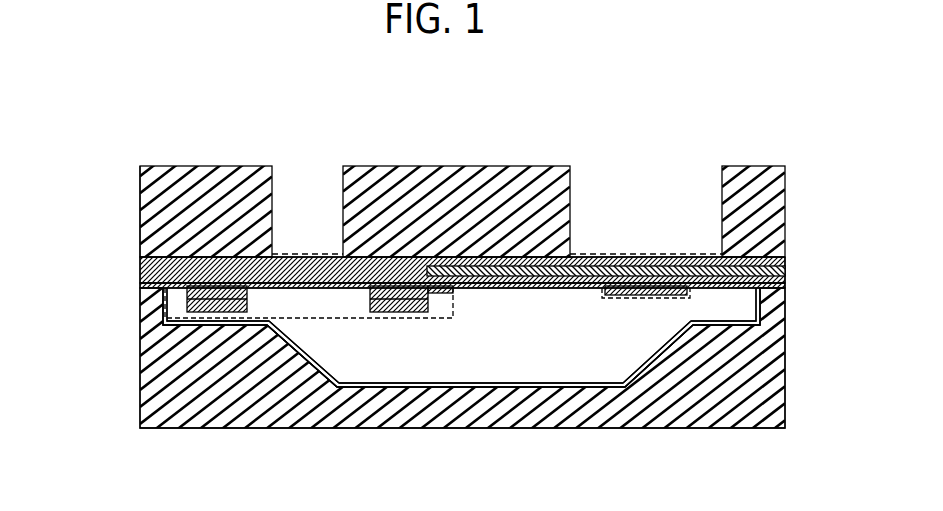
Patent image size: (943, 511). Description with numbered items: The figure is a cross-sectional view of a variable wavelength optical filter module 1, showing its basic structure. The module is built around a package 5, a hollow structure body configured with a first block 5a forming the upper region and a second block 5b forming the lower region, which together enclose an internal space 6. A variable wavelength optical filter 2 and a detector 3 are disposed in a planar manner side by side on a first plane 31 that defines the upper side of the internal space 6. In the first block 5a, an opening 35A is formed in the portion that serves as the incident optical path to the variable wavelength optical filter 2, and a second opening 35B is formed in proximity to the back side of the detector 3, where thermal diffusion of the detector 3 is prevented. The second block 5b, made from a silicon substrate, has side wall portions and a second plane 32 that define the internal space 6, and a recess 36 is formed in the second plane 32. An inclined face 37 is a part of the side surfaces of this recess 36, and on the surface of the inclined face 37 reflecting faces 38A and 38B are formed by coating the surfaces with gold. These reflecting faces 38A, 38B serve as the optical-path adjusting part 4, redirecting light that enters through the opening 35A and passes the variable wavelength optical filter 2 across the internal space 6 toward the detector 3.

The variable wavelength optical filter module 1 is at (105, 212).
The variable wavelength optical filter 2 is at (393, 318).
The detector 3 is at (645, 300).
The optical-path adjusting part 4 is at (461, 337).
The package 5 is at (68, 258).
The first block 5a is at (140, 258).
The second block 5b is at (160, 345).
The internal space 6 is at (518, 302).
The first plane 31 is at (787, 283).
The second plane 32 is at (717, 324).
The opening 35A is at (300, 210).
The opening 35B is at (643, 222).
The recess 36 is at (522, 367).
The inclined face 37 is at (303, 363).
The reflecting face 38A is at (310, 356).
The reflecting face 38B is at (657, 358).